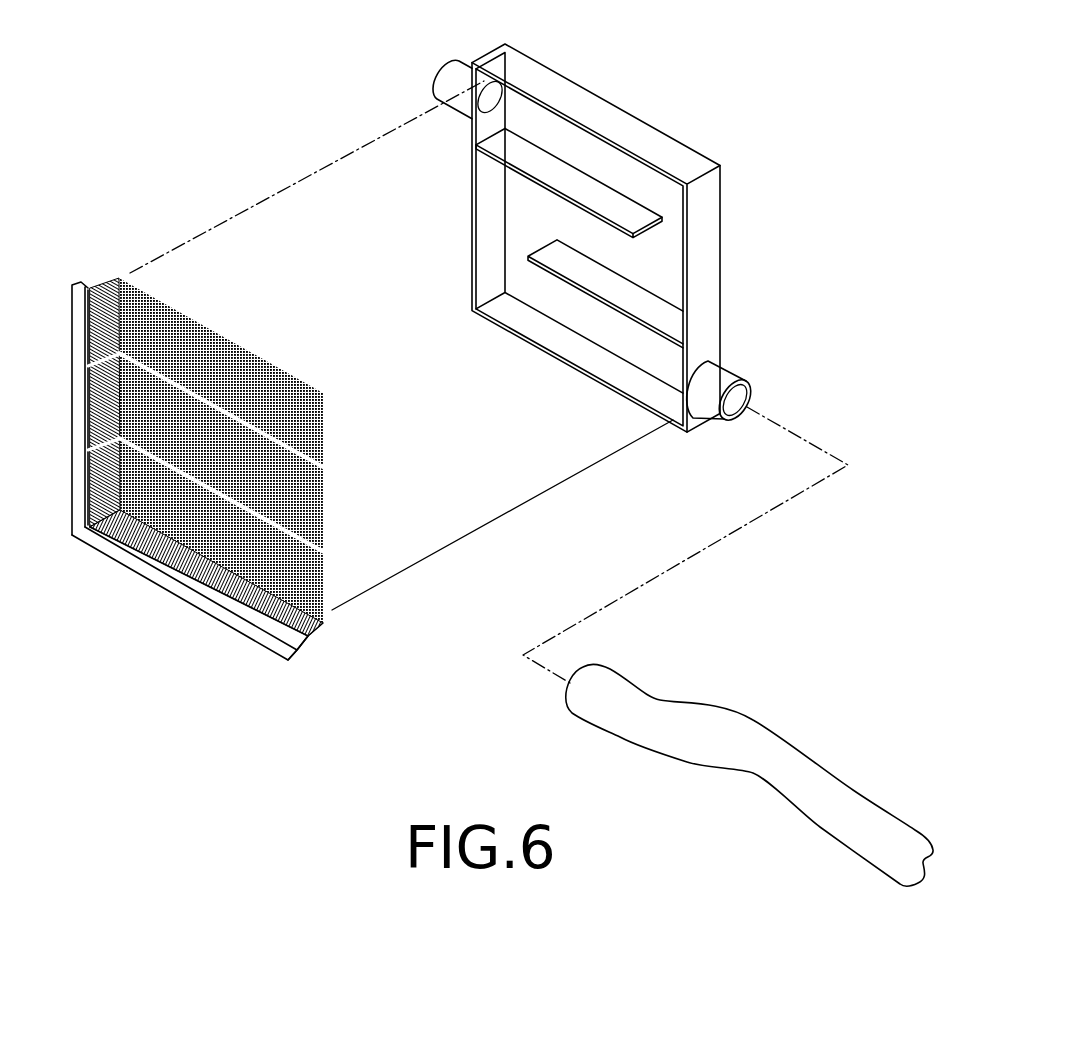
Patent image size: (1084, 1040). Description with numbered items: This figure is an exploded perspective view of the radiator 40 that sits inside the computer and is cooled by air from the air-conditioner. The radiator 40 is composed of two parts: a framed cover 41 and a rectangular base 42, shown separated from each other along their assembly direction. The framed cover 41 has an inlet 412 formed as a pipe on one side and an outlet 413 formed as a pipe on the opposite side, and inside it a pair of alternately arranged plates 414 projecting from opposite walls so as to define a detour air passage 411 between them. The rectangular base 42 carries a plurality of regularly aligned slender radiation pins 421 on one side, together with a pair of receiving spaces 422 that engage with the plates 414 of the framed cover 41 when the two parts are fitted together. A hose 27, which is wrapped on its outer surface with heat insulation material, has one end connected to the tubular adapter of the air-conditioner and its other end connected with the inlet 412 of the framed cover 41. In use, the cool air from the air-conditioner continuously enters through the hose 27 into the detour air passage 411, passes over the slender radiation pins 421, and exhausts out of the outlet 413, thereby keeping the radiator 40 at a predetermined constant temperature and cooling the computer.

The radiator 40 is at (762, 99).
The framed cover 41 is at (712, 250).
The detour air passage 411 is at (627, 372).
The inlet 412 is at (738, 400).
The outlet 413 is at (453, 78).
The plates 414 is at (632, 306).
The rectangular base 42 is at (162, 582).
The slender radiation pins 421 is at (307, 633).
The receiving spaces 422 is at (323, 550).
The hose 27 is at (782, 747).